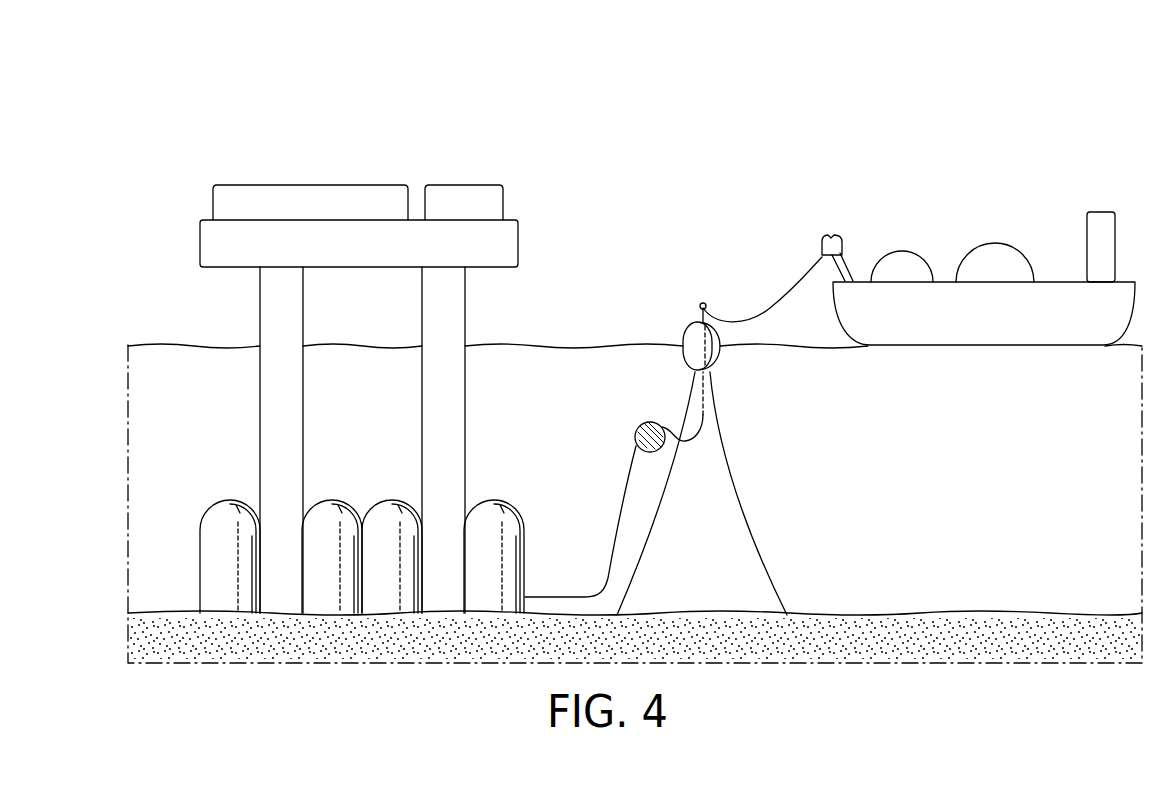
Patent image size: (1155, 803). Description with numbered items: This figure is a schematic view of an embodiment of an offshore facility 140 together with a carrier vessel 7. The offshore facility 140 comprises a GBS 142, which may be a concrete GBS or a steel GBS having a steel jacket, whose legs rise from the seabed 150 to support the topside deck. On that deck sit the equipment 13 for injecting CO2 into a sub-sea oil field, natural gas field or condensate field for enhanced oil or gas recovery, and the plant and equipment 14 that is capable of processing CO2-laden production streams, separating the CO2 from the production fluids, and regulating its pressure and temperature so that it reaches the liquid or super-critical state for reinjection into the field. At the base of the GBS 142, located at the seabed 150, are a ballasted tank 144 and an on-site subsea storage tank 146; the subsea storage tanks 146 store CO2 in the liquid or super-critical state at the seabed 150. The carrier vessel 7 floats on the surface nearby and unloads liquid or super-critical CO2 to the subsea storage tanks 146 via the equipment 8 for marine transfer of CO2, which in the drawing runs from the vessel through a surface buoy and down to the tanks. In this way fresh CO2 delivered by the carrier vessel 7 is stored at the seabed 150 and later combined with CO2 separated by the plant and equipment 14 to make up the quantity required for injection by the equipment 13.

The offshore facility 140 is at (358, 327).
The equipment for injecting CO2 13 is at (315, 192).
The plant and equipment 14 is at (468, 192).
The GBS 142 is at (268, 415).
The ballasted tank 144 is at (212, 506).
The on-site subsea storage tank 146 is at (355, 508).
The seabed 150 is at (158, 612).
The equipment for marine transfer of CO2 8 is at (740, 320).
The carrier vessel 7 is at (946, 290).